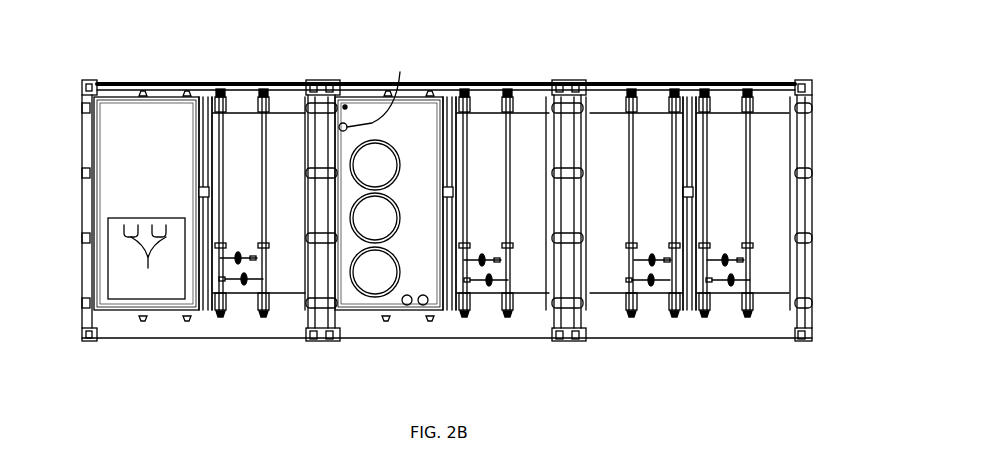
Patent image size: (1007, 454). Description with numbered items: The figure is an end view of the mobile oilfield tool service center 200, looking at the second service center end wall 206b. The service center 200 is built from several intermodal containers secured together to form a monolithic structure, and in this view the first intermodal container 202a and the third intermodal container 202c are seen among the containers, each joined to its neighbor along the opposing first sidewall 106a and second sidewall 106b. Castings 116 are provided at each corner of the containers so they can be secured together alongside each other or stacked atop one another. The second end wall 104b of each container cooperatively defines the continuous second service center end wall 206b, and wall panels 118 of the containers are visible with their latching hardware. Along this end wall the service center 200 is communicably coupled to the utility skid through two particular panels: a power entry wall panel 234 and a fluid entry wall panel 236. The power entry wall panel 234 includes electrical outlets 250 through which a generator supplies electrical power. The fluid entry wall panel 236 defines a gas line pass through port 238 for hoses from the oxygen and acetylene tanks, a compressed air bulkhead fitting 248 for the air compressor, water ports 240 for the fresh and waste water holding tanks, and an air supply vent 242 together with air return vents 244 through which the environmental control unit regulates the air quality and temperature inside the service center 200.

The mobile oilfield tool service center 200 is at (150, 62).
The first intermodal container 202a is at (178, 122).
The third intermodal container 202c is at (684, 124).
The castings 116 is at (82, 86).
The first sidewall 106a is at (76, 210).
The second sidewall 106b is at (818, 145).
The power entry wall panel 234 is at (160, 167).
The fluid entry wall panel 236 is at (439, 168).
The air return vents 244 is at (388, 175).
The air supply vent 242 is at (388, 282).
The water ports 240 is at (407, 305).
The compressed air bulkhead fitting 248 is at (346, 106).
The gas line pass through port 238 is at (376, 86).
The electrical outlets 250 is at (161, 288).
The second service center end wall 206b is at (241, 336).
The second end wall 104b is at (688, 255).
The wall panels 118 is at (650, 288).